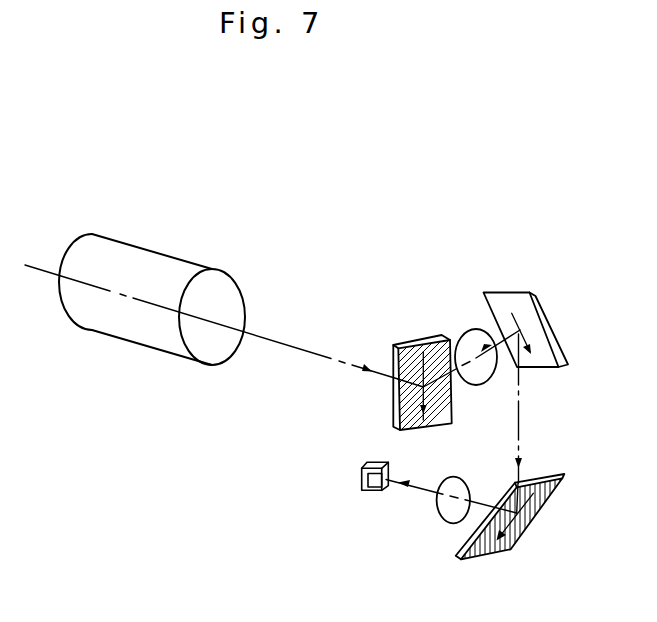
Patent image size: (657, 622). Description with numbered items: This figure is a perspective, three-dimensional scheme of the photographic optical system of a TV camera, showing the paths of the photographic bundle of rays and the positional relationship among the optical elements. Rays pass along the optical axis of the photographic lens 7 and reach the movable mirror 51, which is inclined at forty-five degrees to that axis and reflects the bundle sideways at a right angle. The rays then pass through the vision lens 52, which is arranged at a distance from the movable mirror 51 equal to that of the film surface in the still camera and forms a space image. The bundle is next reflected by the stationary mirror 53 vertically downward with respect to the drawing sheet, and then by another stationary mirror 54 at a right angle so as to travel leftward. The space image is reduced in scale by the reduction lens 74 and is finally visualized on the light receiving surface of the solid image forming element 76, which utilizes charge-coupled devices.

The photographic lens 7 is at (153, 252).
The movable mirror 51 is at (410, 345).
The vision lens 52 is at (472, 328).
The stationary mirror 53 is at (550, 327).
The stationary mirror 54 is at (545, 500).
The reduction lens 74 is at (440, 522).
The solid image forming element 76 is at (375, 493).